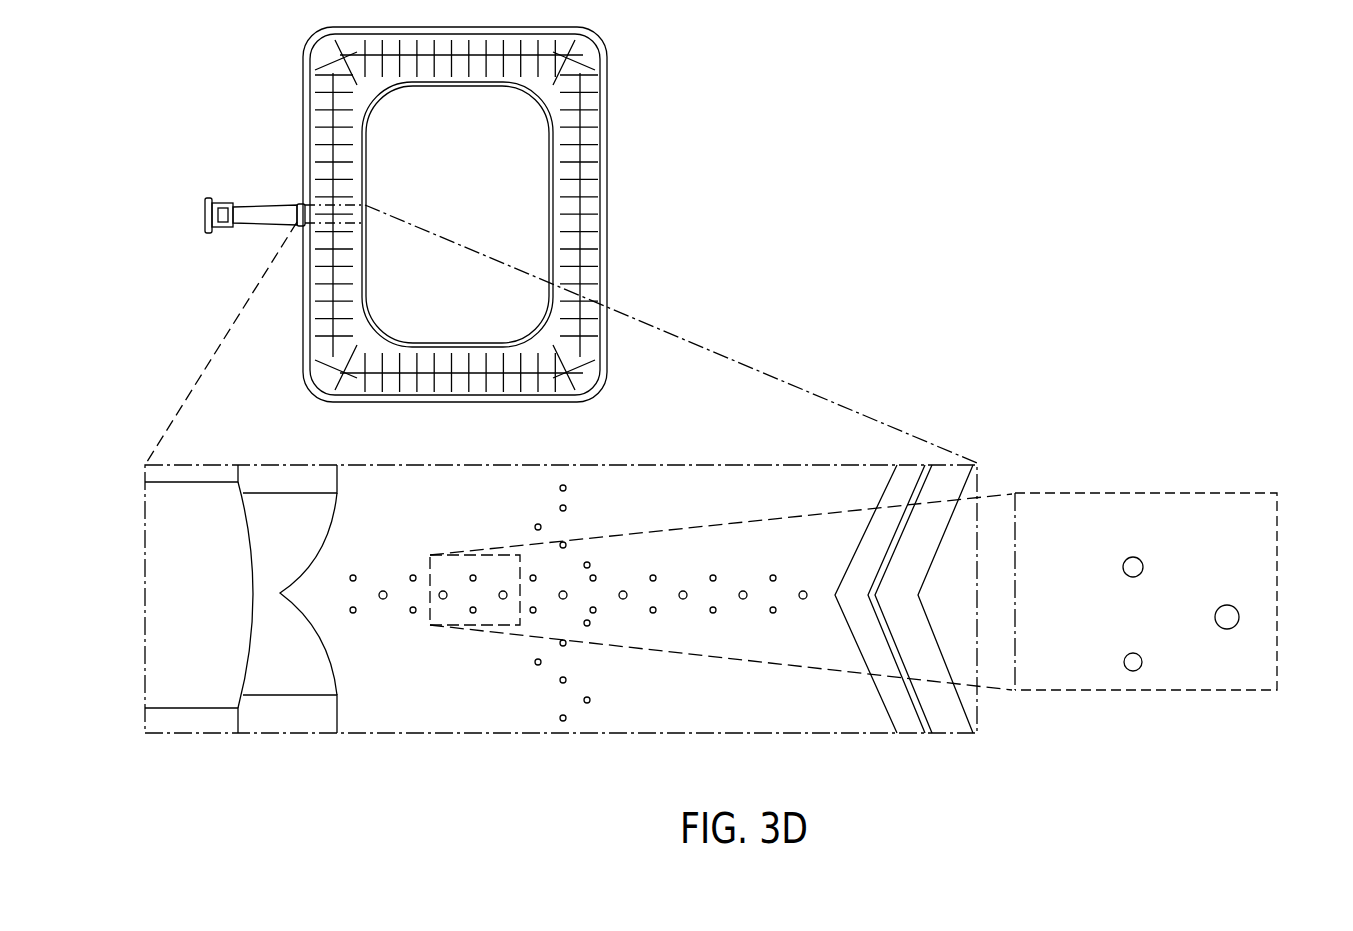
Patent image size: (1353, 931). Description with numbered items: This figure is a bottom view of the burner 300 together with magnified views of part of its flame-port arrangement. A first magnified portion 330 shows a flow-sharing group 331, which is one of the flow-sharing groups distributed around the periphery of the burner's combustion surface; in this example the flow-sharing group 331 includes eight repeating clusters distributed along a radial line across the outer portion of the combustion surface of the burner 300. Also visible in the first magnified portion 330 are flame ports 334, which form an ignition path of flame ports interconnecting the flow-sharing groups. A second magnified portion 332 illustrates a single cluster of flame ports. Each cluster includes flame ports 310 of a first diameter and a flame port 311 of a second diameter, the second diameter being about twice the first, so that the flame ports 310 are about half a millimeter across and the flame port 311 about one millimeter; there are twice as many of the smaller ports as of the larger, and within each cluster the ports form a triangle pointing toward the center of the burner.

The burner 300 is at (607, 107).
The first magnified portion 330 is at (503, 720).
The flow-sharing group 331 is at (808, 713).
The second magnified portion 332 is at (1207, 680).
The flame ports 334 is at (587, 487).
The flame ports 310 is at (1136, 557).
The flame port 311 is at (1240, 614).